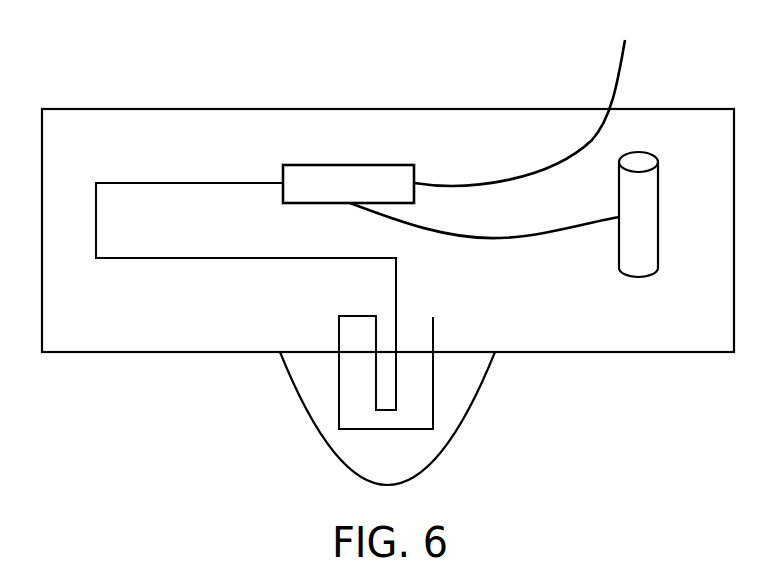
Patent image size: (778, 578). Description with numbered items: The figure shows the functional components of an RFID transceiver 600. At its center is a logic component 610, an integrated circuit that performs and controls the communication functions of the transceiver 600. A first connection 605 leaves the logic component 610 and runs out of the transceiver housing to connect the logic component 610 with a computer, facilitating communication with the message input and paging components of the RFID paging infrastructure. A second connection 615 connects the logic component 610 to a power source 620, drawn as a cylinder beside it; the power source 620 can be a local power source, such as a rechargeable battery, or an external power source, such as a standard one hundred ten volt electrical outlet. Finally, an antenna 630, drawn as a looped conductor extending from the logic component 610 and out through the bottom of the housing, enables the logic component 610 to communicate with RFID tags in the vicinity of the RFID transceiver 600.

The RFID transceiver 600 is at (356, 100).
The first connection 605 is at (620, 73).
The logic component 610 is at (372, 196).
The second connection 615 is at (500, 239).
The power source 620 is at (645, 207).
The antenna 630 is at (222, 258).